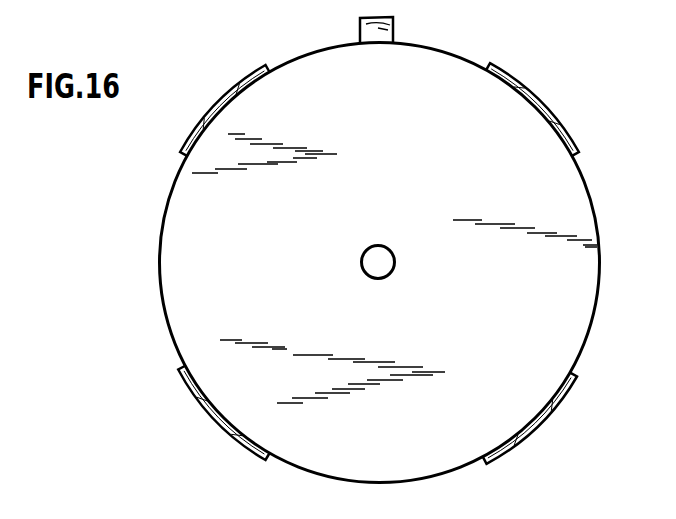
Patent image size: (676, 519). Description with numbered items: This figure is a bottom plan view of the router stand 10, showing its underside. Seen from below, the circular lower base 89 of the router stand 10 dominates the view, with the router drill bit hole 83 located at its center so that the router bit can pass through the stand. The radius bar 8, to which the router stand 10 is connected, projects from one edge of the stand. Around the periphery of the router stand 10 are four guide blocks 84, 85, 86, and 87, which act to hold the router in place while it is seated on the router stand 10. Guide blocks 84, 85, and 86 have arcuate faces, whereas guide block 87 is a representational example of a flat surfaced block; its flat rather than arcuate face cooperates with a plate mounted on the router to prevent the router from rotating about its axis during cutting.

The radius bar 8 is at (394, 30).
The router stand 10 is at (604, 300).
The router drill bit hole 83 is at (390, 257).
The guide block 84 is at (219, 431).
The guide block 85 is at (222, 92).
The guide block 86 is at (542, 101).
The guide block 87 is at (540, 425).
The lower base 89 is at (392, 150).